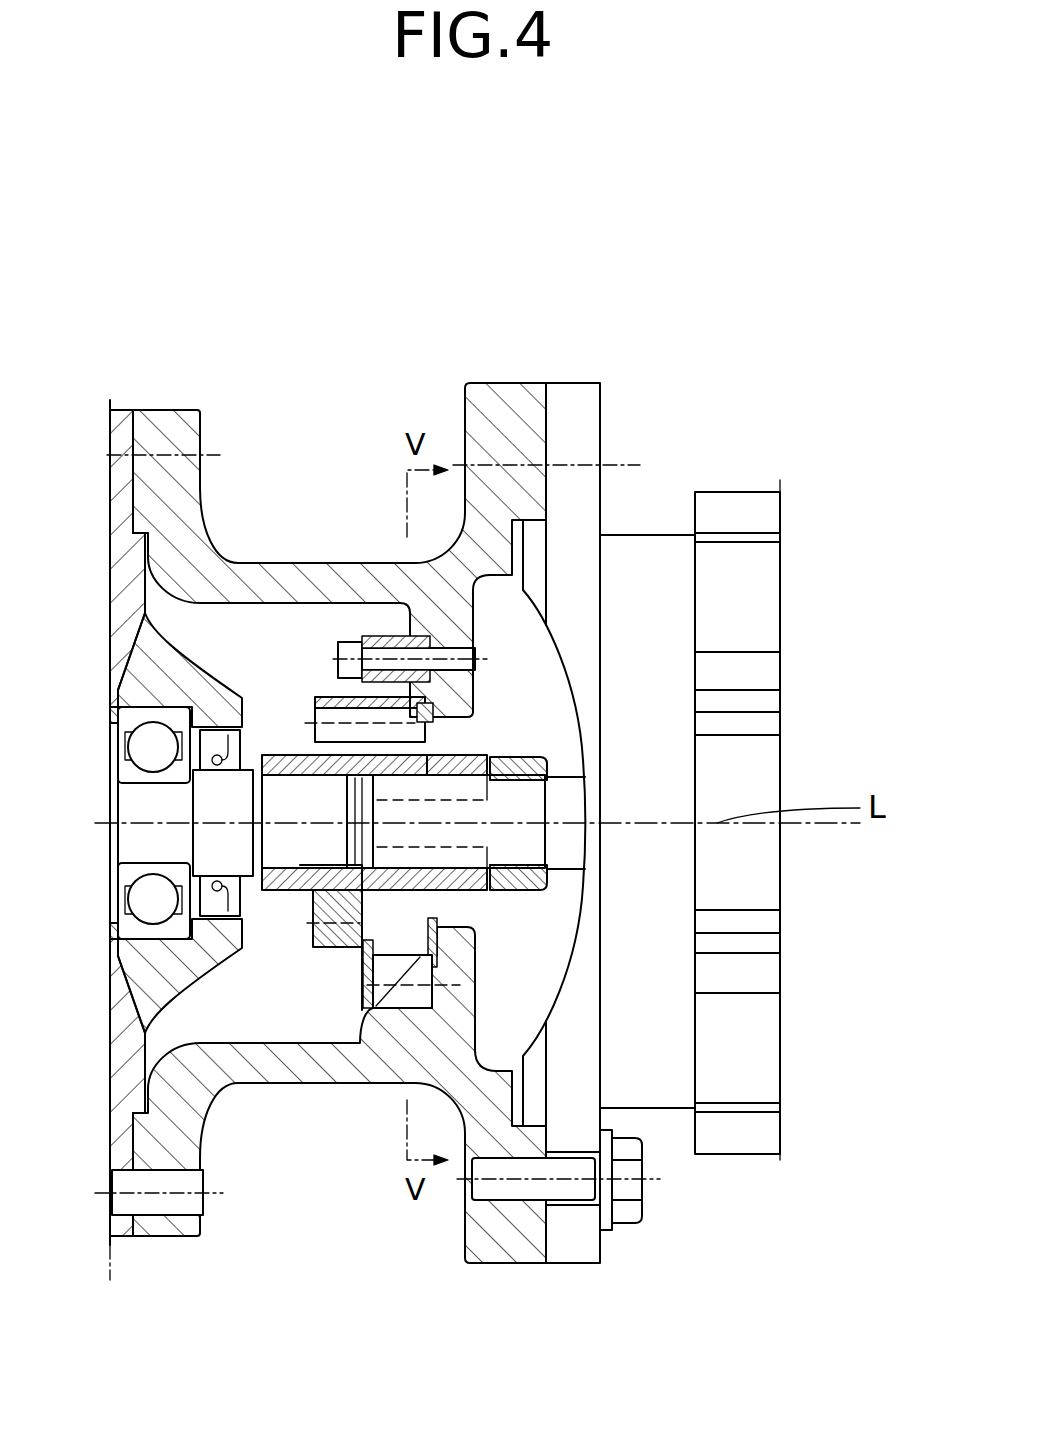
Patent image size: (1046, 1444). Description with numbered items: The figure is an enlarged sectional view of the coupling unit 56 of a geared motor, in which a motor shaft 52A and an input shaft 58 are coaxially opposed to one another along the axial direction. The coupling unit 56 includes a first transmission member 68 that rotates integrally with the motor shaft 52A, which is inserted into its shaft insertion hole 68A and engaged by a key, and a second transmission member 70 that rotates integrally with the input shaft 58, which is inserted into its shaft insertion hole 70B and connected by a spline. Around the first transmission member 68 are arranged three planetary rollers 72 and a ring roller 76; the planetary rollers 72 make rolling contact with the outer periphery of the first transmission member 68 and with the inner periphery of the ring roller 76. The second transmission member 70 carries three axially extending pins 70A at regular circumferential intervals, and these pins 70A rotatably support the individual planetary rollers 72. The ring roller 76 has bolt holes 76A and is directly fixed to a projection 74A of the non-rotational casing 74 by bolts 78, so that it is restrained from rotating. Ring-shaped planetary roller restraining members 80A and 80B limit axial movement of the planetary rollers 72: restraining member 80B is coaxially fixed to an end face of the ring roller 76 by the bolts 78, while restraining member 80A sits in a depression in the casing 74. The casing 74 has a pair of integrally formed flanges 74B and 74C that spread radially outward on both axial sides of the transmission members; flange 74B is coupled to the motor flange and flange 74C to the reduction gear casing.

The coupling unit 56 is at (440, 260).
The casing 74 is at (372, 1085).
The projection 74A is at (463, 688).
The flange 74B is at (520, 383).
The flange 74C is at (172, 410).
The second transmission member 70 is at (292, 768).
The pins 70A is at (312, 700).
The shaft insertion hole 70B is at (313, 935).
The ring roller 76 is at (433, 1000).
The bolt holes 76A is at (410, 640).
The bolts 78 is at (355, 640).
The planetary roller restraining member 80A is at (463, 703).
The planetary roller restraining member 80B is at (340, 642).
The planetary rollers 72 is at (460, 740).
The first transmission member 68 is at (489, 899).
The shaft insertion hole 68A is at (450, 843).
The motor shaft 52A is at (548, 868).
The input shaft 58 is at (250, 860).